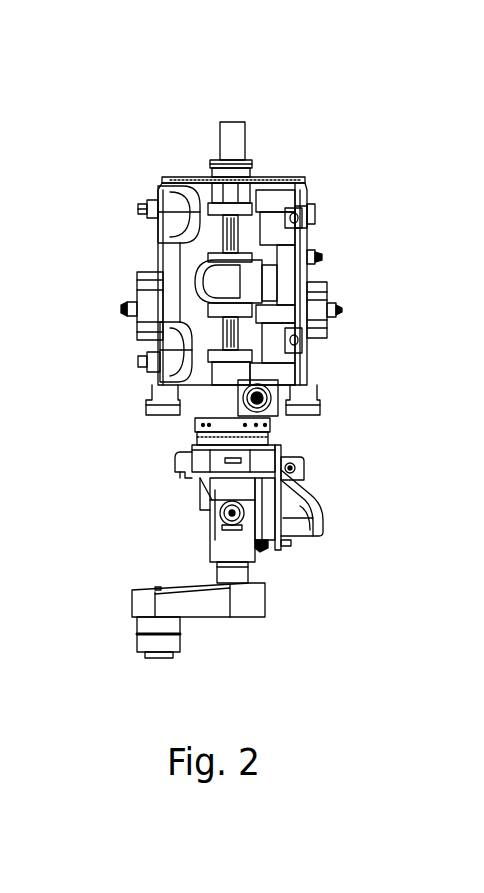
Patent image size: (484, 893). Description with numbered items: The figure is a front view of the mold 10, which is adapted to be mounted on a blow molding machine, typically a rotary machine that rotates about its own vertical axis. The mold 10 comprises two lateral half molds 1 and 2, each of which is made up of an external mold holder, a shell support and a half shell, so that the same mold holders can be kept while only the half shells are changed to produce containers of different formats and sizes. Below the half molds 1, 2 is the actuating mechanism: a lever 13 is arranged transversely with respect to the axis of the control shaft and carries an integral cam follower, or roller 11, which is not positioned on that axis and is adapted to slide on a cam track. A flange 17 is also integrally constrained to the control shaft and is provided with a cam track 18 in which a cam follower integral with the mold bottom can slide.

The mold 10 is at (152, 116).
The lateral half mold 1 is at (168, 265).
The lateral half mold 2 is at (322, 231).
The flange 17 is at (305, 462).
The cam track 18 is at (303, 513).
The lever 13 is at (250, 600).
The roller 11 is at (167, 642).